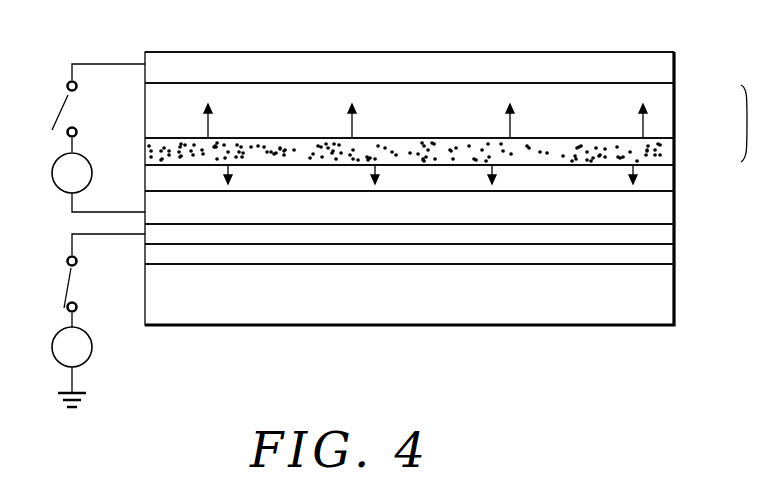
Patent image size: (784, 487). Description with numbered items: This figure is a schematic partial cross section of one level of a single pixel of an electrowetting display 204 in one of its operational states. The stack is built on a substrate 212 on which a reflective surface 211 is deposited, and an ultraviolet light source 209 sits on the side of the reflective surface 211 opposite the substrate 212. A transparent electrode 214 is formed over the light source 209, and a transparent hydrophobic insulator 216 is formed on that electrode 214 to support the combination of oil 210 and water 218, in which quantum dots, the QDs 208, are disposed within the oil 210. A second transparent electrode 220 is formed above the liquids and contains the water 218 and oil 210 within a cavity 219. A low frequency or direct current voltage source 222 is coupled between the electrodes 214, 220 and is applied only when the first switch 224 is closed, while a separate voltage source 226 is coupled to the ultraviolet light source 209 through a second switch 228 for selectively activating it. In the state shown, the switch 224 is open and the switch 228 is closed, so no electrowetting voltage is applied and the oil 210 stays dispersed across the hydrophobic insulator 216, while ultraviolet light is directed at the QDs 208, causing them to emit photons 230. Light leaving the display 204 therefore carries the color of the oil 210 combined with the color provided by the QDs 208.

The electrowetting display 204 is at (386, 388).
The QDs 208 is at (617, 145).
The ultraviolet (UV) light source 209 is at (662, 235).
The oil 210 is at (662, 152).
The reflective surface 211 is at (657, 252).
The substrate 212 is at (643, 315).
The transparent electrode 214 is at (660, 208).
The transparent hydrophobic insulator 216 is at (662, 180).
The water 218 is at (663, 120).
The cavity 219 is at (762, 123).
The transparent electrode 220 is at (643, 61).
The voltage source 222 is at (53, 177).
The first switch 224 is at (73, 112).
The voltage source 226 is at (58, 362).
The switch 228 is at (81, 290).
The photons 230 is at (356, 108).